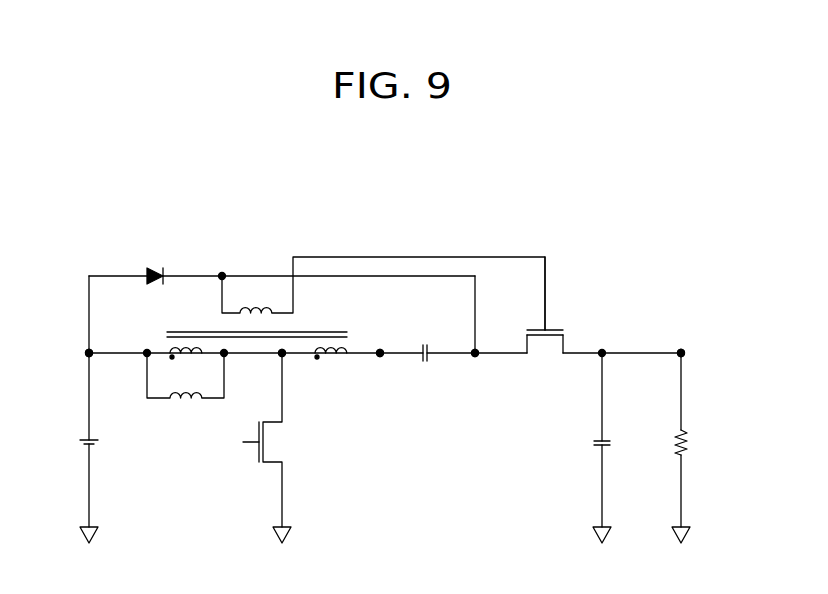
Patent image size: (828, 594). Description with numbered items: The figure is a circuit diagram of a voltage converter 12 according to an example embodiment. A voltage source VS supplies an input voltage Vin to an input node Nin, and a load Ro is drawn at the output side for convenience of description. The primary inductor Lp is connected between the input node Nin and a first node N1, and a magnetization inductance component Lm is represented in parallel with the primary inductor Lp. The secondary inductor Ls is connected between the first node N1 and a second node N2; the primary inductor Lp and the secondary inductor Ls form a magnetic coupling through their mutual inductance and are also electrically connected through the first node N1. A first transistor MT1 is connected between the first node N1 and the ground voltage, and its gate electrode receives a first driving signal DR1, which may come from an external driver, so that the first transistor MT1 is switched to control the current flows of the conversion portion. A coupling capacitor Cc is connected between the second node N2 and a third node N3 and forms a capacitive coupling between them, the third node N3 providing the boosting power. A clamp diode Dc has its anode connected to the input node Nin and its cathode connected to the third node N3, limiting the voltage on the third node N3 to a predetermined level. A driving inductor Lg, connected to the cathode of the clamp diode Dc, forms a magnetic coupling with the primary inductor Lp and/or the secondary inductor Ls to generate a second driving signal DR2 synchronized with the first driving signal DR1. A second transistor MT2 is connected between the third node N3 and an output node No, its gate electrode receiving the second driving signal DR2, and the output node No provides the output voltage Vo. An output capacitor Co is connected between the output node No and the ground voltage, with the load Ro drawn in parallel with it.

The voltage converter 12 is at (387, 178).
The input voltage Vin is at (69, 352).
The input node Nin is at (85, 357).
The clamp diode Dc is at (154, 265).
The driving inductor Lg is at (383, 293).
The primary inductor Lp is at (186, 365).
The magnetization inductance component Lm is at (185, 389).
The secondary inductor Ls is at (331, 365).
The first node N1 is at (284, 356).
The second node N2 is at (380, 357).
The third node N3 is at (475, 357).
The coupling capacitor Cc is at (424, 343).
The second transistor MT2 is at (546, 350).
The second driving signal DR2 is at (567, 293).
The output voltage Vo is at (691, 343).
The output node No is at (684, 355).
The voltage source VS is at (101, 444).
The first transistor MT1 is at (282, 440).
The first driving signal DR1 is at (232, 444).
The output capacitor Co is at (615, 440).
The load Ro is at (694, 440).